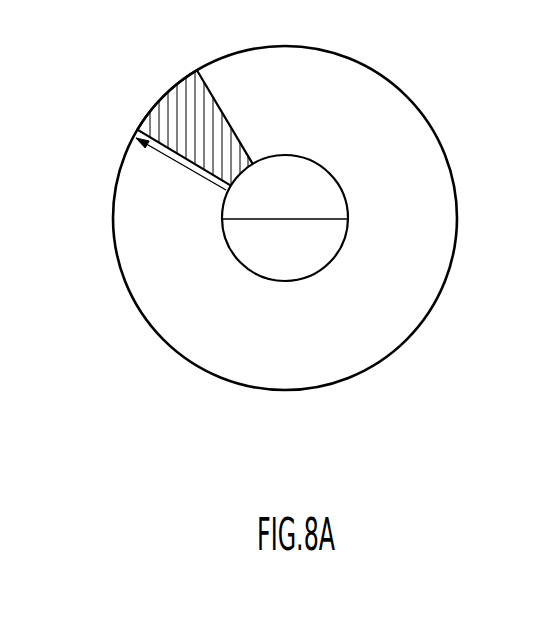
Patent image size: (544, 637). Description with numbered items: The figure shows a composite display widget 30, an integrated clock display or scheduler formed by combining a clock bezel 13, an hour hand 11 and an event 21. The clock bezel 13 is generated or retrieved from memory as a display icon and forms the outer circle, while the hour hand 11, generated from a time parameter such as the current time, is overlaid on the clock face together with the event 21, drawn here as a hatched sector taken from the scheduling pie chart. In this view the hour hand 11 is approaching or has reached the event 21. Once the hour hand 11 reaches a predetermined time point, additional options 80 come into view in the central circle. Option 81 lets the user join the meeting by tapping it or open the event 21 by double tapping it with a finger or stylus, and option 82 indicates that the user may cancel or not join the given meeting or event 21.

The composite display widget 30 is at (400, 30).
The clock bezel 13 is at (163, 340).
The event 21 is at (163, 96).
The hour hand 11 is at (181, 164).
The additional options 80 is at (287, 156).
The option 81 is at (342, 191).
The option 82 is at (330, 262).